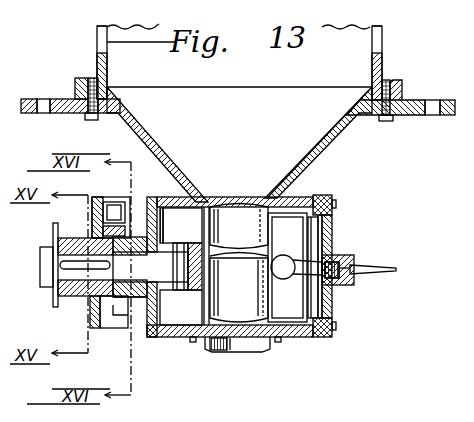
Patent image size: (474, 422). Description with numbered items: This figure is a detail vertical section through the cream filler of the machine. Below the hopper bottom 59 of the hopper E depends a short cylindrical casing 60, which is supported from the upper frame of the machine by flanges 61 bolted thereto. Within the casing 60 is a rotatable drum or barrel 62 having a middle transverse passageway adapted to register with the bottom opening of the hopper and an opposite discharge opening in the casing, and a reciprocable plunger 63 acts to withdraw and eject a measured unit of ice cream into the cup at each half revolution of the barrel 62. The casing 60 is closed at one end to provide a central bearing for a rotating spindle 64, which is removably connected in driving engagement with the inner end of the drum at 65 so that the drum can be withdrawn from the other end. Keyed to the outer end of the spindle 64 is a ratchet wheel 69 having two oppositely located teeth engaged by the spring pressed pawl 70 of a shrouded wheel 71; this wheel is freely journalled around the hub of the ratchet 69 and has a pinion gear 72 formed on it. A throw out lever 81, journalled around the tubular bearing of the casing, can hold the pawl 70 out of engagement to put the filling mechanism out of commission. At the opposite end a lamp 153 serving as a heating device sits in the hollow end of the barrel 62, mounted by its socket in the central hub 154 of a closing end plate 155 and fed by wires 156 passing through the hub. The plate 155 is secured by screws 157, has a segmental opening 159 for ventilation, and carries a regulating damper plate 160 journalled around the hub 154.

The hopper bottom 59 is at (239, 113).
The hopper E is at (384, 43).
The flanges 61 is at (43, 100).
The cylindrical casing 60 is at (293, 196).
The rotatable drum or barrel 62 is at (183, 209).
The reciprocable plunger 63 is at (214, 289).
The rotating spindle 64 is at (123, 267).
The driving connection 65 is at (186, 284).
The ratchet wheel 69 is at (110, 288).
The spring pressed pawl 70 is at (120, 217).
The shrouded wheel 71 is at (115, 328).
The pinion gear 72 is at (90, 237).
The throw out lever 81 is at (131, 297).
The lamp 153 is at (320, 240).
The central hub 154 is at (349, 284).
The closing end plate 155 is at (327, 303).
The wires 156 is at (380, 264).
The screws 157 is at (338, 198).
The segmental opening 159 is at (327, 223).
The regulating damper plate 160 is at (287, 263).